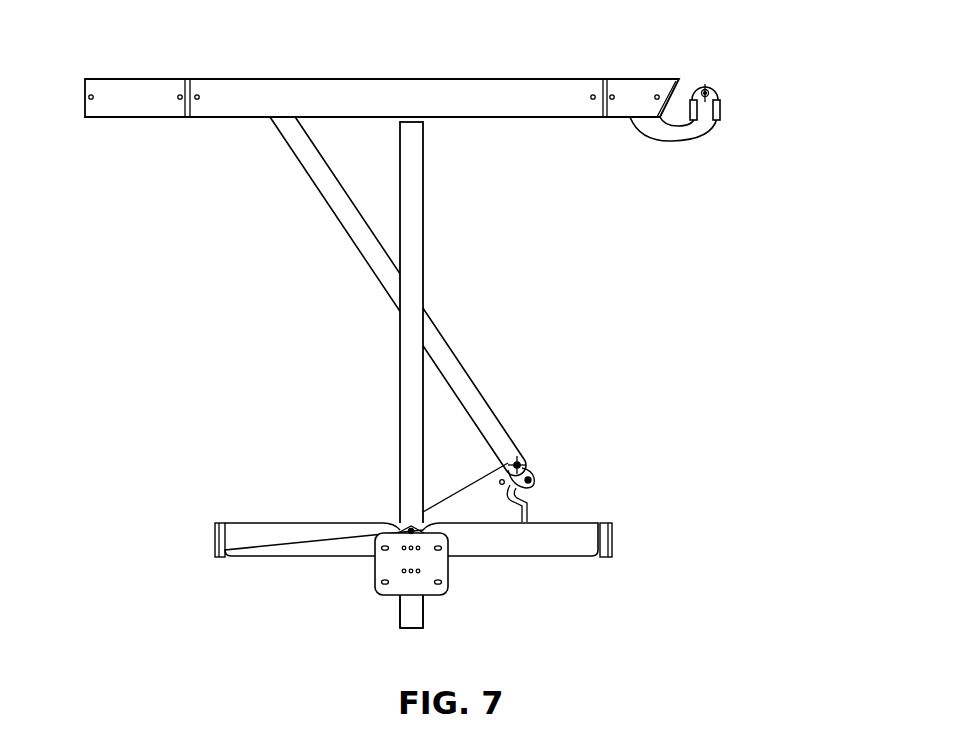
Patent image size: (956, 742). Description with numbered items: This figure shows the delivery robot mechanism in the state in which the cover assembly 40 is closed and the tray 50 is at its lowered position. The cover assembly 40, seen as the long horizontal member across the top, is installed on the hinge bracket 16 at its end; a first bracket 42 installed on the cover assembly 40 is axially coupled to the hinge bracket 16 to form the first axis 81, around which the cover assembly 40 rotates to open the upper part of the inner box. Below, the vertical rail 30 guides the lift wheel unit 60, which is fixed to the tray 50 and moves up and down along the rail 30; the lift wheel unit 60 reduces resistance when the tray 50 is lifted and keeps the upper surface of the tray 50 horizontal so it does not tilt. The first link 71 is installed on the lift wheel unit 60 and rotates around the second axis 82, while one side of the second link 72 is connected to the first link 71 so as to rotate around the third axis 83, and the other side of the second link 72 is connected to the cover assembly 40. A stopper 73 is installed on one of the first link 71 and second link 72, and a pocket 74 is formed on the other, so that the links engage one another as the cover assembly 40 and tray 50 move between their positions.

The cover assembly 40 is at (352, 80).
The first axis 81 is at (710, 88).
The hinge bracket 16 is at (722, 110).
The first bracket 42 is at (684, 140).
The rail 30 is at (425, 236).
The second link 72 is at (478, 387).
The third axis 83 is at (522, 462).
The first link 71 is at (480, 487).
The stopper 73 is at (534, 481).
The pocket 74 is at (526, 509).
The tray 50 is at (265, 520).
The second axis 82 is at (411, 530).
The lift wheel unit 60 is at (447, 574).